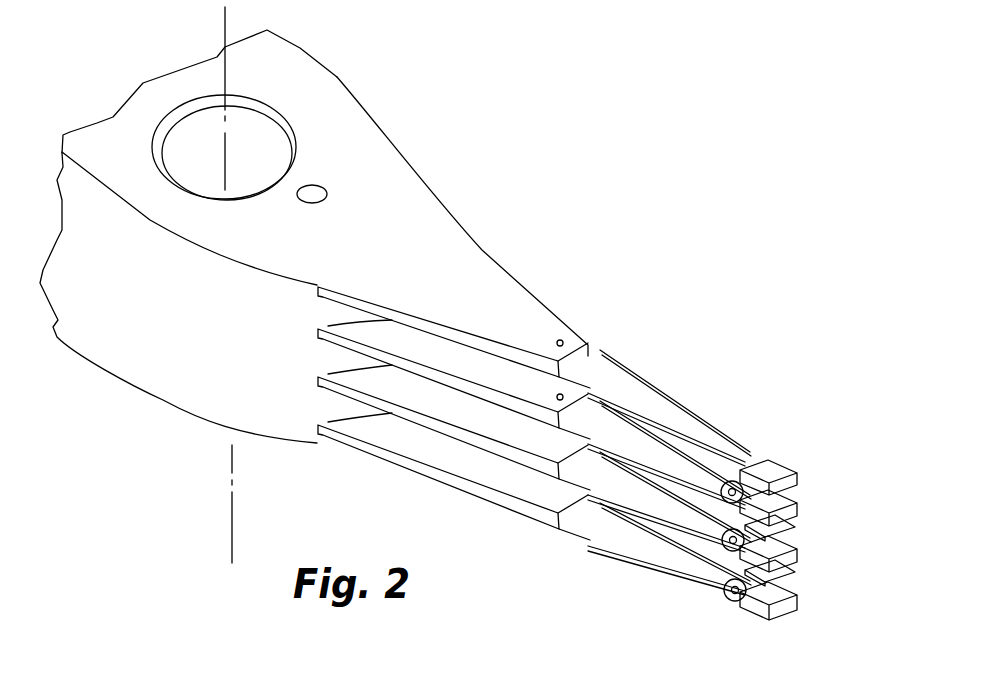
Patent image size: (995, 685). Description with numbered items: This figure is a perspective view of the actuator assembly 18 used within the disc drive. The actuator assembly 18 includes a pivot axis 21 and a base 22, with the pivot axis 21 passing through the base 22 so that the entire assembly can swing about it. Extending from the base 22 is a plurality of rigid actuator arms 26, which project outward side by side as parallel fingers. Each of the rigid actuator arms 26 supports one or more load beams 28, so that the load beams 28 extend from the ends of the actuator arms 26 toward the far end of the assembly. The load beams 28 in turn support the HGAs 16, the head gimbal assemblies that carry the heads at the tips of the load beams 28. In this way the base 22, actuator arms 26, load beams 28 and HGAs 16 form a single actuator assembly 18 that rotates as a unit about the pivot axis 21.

The HGAs 16 is at (805, 593).
The actuator assembly 18 is at (467, 218).
The pivot axis 21 is at (233, 466).
The base 22 is at (318, 97).
The rigid actuator arms 26 is at (479, 314).
The load beams 28 is at (615, 530).